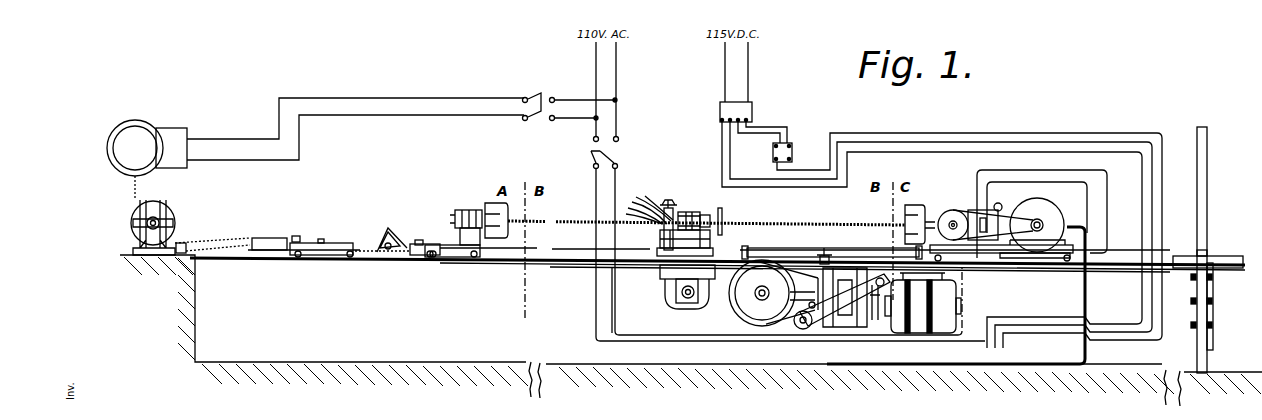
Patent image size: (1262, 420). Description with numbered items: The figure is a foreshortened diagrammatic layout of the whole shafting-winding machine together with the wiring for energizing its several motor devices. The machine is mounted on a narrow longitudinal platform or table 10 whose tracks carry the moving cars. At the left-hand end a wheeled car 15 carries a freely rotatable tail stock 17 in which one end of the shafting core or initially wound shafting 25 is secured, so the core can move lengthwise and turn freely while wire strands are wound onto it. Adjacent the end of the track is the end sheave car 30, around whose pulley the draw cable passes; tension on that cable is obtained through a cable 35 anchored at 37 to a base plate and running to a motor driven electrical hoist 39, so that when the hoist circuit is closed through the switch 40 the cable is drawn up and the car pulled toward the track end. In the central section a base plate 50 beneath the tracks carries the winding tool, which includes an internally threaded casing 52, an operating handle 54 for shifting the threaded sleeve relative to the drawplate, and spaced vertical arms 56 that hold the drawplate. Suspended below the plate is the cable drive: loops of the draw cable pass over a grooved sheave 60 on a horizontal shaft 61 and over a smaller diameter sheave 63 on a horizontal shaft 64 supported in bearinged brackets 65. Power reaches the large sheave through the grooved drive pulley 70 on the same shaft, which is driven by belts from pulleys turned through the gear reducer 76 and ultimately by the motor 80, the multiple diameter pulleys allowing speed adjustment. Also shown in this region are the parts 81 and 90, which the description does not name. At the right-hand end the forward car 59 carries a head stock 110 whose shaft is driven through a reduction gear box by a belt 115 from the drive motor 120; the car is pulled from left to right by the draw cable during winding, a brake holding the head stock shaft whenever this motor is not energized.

The longitudinal platform or table 10 is at (1226, 256).
The wheeled car 15 is at (452, 257).
The tail stock 17 is at (480, 206).
The shafting core or initially wound shafting 25 is at (580, 212).
The end sheave car 30 is at (337, 244).
The cable 35 is at (222, 250).
The anchor 37 is at (183, 243).
The motor driven electrical hoist 39 is at (178, 118).
The switch 40 is at (533, 95).
The base plate 50 is at (700, 218).
The internally threaded casing 52 is at (702, 214).
The operating handle 54 is at (724, 217).
The vertical arms 56 is at (690, 196).
The forward car 59 is at (1060, 258).
The grooved sheave 60 is at (755, 322).
The horizontal shaft 61 is at (755, 296).
The smaller diameter sheave 63 is at (674, 300).
The horizontal shaft 64 is at (662, 291).
The bearinged brackets 65 is at (826, 254).
The grooved drive pulley 70 is at (769, 325).
The gear reducer 76 is at (860, 322).
The motor 80 is at (947, 330).
The lever 81 is at (805, 329).
The tube 90 is at (876, 245).
The head stock 110 is at (934, 212).
The belt 115 is at (1008, 258).
The drive motor 120 is at (1046, 212).